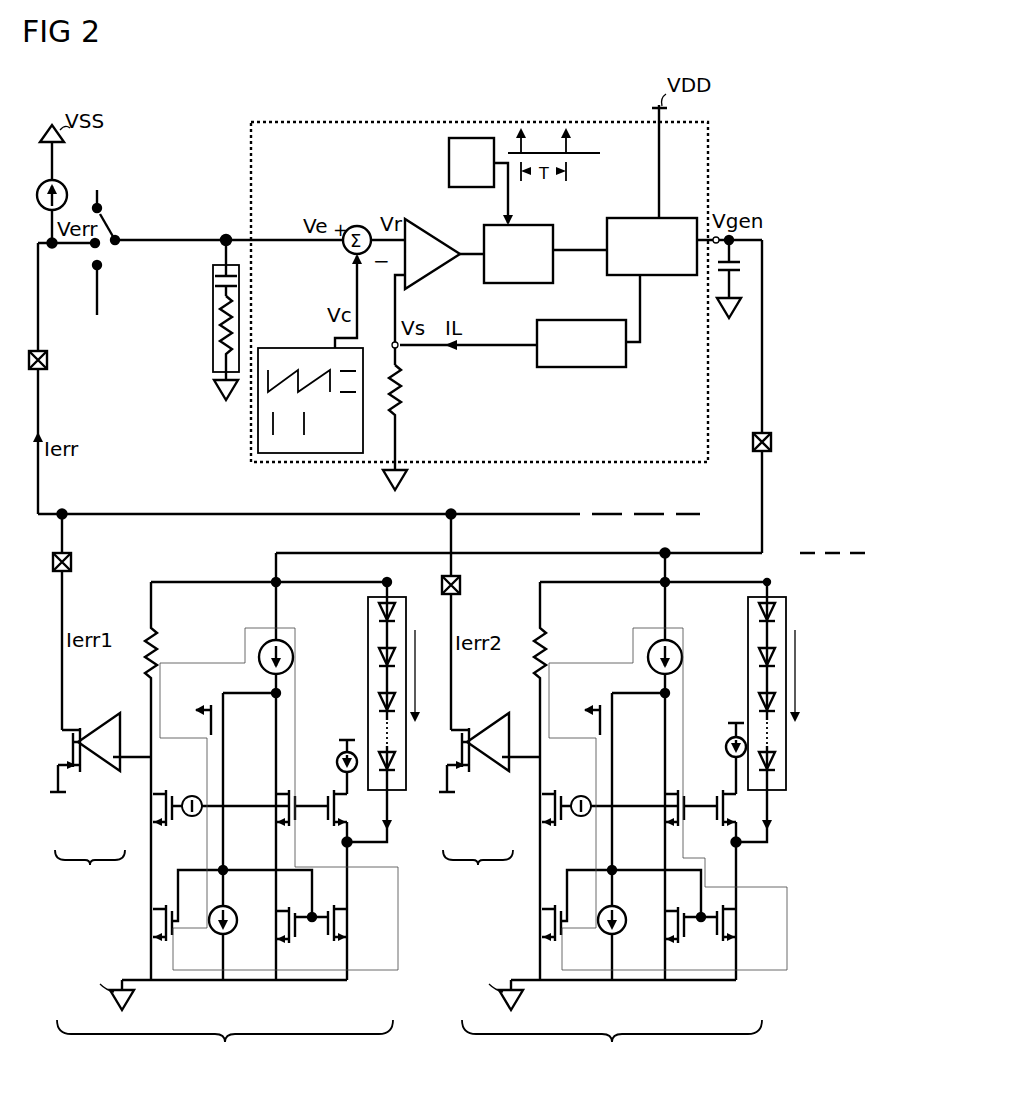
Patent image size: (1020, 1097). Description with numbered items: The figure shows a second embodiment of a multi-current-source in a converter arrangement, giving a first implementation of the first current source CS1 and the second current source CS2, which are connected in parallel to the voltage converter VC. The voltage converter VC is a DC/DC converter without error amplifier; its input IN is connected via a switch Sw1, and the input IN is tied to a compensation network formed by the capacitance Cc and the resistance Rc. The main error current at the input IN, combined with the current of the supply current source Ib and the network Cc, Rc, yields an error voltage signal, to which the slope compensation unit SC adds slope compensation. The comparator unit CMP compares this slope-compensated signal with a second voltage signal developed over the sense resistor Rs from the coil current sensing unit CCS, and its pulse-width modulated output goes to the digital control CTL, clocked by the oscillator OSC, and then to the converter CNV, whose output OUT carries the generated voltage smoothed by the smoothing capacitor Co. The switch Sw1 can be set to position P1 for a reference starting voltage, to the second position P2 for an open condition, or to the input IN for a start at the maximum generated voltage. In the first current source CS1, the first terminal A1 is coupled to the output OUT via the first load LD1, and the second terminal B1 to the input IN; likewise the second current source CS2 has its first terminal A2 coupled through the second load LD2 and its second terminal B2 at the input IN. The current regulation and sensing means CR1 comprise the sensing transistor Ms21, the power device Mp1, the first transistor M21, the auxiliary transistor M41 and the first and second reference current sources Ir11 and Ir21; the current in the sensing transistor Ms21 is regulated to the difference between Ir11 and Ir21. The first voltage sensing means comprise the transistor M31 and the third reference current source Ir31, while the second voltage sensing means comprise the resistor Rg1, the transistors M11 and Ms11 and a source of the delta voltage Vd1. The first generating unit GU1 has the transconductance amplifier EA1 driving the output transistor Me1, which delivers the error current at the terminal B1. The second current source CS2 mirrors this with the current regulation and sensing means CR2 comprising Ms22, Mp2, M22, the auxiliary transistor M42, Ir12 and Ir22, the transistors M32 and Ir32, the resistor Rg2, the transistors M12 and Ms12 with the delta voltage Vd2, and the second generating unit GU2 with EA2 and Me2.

The supply current source Ib is at (57, 184).
The input IN is at (51, 363).
The position P1 is at (96, 300).
The second position P2 is at (102, 182).
The switch Sw1 is at (128, 216).
The capacitance Cc is at (179, 306).
The resistance Rc is at (209, 348).
The voltage converter VC is at (708, 148).
The comparator unit CMP is at (452, 224).
The sense resistor Rs is at (410, 427).
The slope compensation unit SC is at (294, 348).
The oscillator OSC is at (446, 162).
The digital control CTL is at (540, 284).
The converter CNV is at (664, 276).
The coil current sensing unit CCS is at (580, 368).
The output OUT is at (785, 444).
The smoothing capacitor Co is at (739, 279).
The second terminal B1 is at (49, 565).
The second terminal B2 is at (467, 588).
The first current source CS1 is at (233, 817).
The second current source CS2 is at (616, 817).
The resistor Rg1 is at (172, 781).
The resistor Rg2 is at (561, 781).
The first reference current source Ir11 is at (260, 625).
The first reference current source Ir12 is at (649, 625).
The auxiliary transistor M41 is at (235, 799).
The auxiliary transistor M42 is at (624, 799).
The transistor M11 is at (137, 808).
The transistor M12 is at (526, 808).
The delta voltage Vd1 is at (230, 795).
The delta voltage Vd2 is at (619, 795).
The first transistor M21 is at (280, 800).
The first transistor M22 is at (669, 800).
The transistor M31 is at (353, 876).
The transistor M32 is at (742, 868).
The third reference current source Ir31 is at (324, 757).
The third reference current source Ir32 is at (711, 745).
The first load LD1 is at (368, 652).
The second load LD2 is at (748, 634).
The first terminal A1 is at (351, 846).
The first terminal A2 is at (740, 846).
The transistor Ms11 is at (187, 906).
The transistor Ms12 is at (576, 906).
The second reference current source Ir21 is at (210, 943).
The second reference current source Ir22 is at (599, 943).
The sensing transistor Ms21 is at (284, 925).
The sensing transistor Ms22 is at (673, 925).
The power device Mp1 is at (359, 923).
The power device Mp2 is at (748, 923).
The transconductance amplifier EA1 is at (92, 714).
The transconductance amplifier EA2 is at (481, 714).
The output transistor Me1 is at (53, 760).
The output transistor Me2 is at (442, 760).
The current regulation and sensing means CR1 is at (392, 872).
The current regulation and sensing means CR2 is at (742, 970).
The first generating unit GU1 is at (90, 873).
The second generating unit GU2 is at (478, 873).